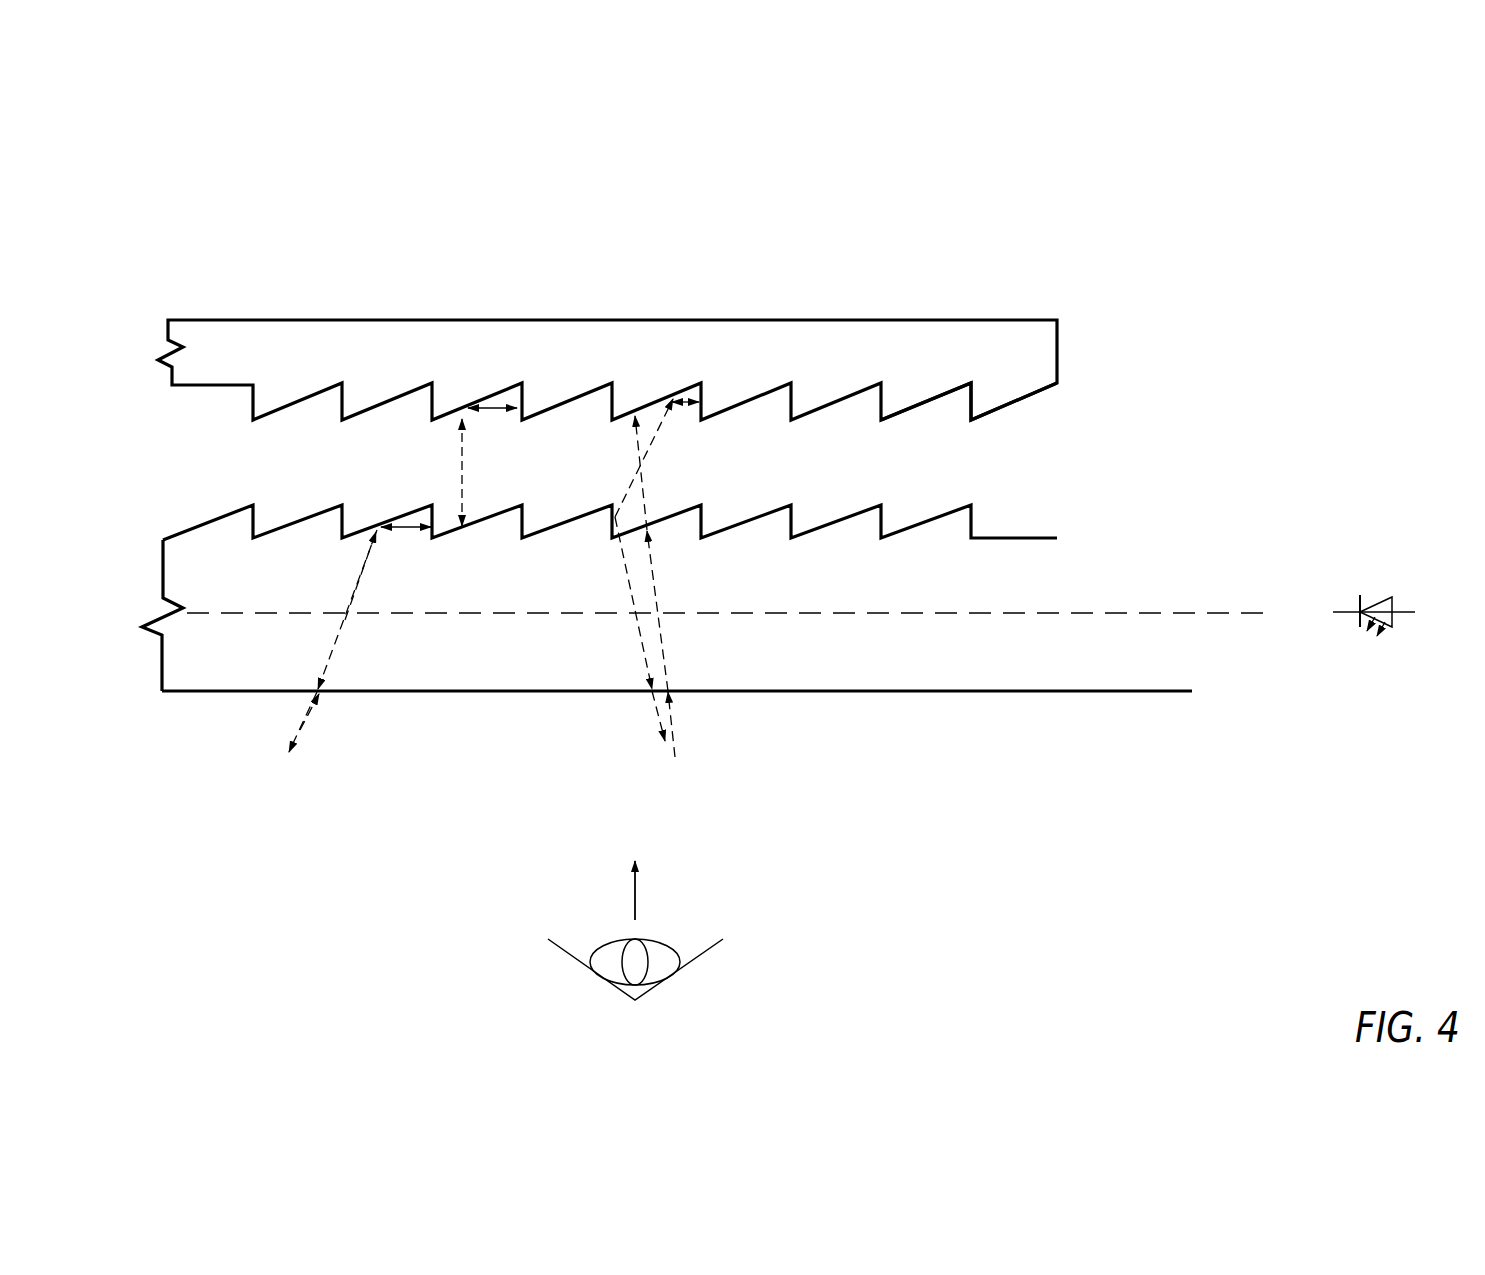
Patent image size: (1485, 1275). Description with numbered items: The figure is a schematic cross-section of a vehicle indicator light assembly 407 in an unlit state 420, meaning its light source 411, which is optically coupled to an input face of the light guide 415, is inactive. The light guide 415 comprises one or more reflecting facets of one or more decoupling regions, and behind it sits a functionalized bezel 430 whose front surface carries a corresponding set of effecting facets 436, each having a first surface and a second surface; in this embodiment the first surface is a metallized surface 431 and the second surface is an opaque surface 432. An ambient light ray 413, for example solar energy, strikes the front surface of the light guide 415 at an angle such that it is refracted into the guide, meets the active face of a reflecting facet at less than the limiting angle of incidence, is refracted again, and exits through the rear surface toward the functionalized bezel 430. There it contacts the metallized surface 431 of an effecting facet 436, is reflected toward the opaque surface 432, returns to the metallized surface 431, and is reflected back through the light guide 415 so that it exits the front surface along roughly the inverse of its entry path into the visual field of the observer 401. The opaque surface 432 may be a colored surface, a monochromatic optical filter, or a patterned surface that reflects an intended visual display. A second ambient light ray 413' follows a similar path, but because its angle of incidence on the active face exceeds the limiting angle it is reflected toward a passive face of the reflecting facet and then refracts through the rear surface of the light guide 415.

The observer 401 is at (744, 938).
The vehicle indicator light assembly 407 is at (1276, 271).
The light source 411 is at (1399, 639).
The ambient light ray 413 is at (699, 600).
The ambient light ray 413' is at (339, 682).
The light guide 415 is at (181, 711).
The unlit state 420 is at (1329, 513).
The functionalized bezel 430 is at (1063, 307).
The metallized surface 431 is at (492, 395).
The opaque surface 432 is at (707, 397).
The effecting facets 436 is at (966, 444).